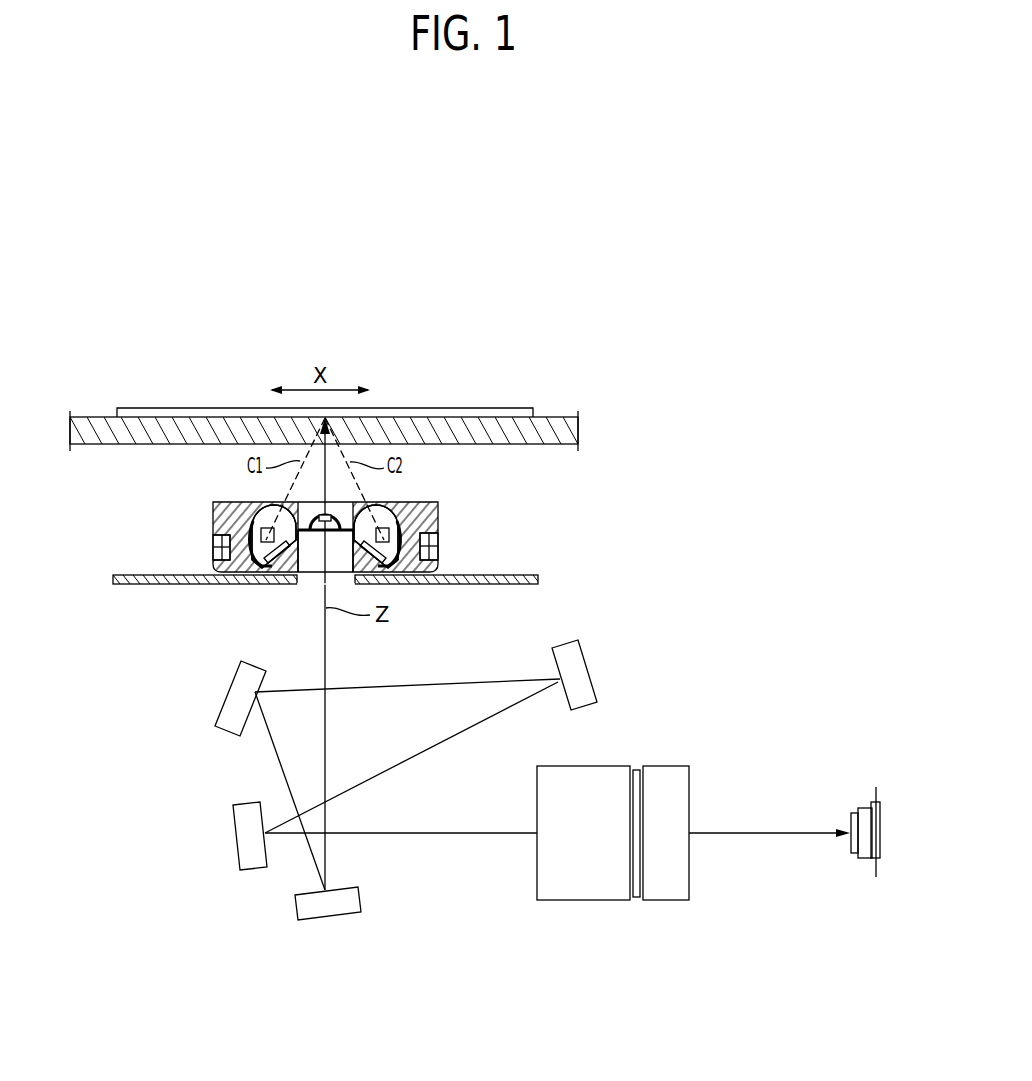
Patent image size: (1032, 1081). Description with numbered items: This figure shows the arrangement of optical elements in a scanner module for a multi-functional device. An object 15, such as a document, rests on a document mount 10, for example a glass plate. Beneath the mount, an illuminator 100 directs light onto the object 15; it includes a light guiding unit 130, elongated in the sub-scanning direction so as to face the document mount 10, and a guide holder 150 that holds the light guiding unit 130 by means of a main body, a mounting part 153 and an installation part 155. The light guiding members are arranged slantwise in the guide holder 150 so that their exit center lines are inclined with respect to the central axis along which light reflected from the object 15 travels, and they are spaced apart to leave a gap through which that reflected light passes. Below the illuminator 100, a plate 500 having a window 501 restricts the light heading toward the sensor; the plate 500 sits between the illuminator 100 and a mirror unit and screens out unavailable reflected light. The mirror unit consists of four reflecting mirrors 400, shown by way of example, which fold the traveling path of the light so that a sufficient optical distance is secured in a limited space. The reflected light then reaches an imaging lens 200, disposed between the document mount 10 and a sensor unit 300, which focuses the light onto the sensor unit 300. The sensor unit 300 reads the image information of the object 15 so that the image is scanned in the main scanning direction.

The document mount 10 is at (196, 430).
The object 15 is at (141, 414).
The illuminator 100 is at (336, 517).
The light guiding unit 130 is at (390, 501).
The guide holder 150 is at (203, 505).
The mounting part 153 is at (438, 543).
The installation part 155 is at (213, 543).
The imaging lens 200 is at (668, 766).
The sensor unit 300 is at (863, 810).
The reflecting mirrors 400 is at (208, 685).
The plate 500 is at (540, 580).
The window 501 is at (318, 584).